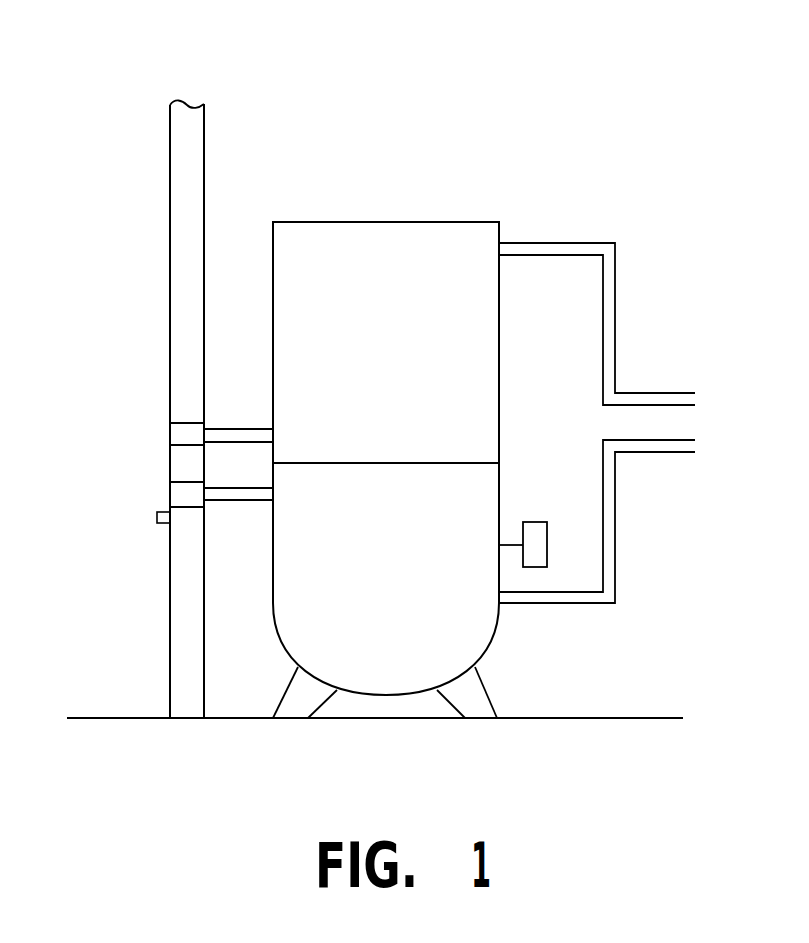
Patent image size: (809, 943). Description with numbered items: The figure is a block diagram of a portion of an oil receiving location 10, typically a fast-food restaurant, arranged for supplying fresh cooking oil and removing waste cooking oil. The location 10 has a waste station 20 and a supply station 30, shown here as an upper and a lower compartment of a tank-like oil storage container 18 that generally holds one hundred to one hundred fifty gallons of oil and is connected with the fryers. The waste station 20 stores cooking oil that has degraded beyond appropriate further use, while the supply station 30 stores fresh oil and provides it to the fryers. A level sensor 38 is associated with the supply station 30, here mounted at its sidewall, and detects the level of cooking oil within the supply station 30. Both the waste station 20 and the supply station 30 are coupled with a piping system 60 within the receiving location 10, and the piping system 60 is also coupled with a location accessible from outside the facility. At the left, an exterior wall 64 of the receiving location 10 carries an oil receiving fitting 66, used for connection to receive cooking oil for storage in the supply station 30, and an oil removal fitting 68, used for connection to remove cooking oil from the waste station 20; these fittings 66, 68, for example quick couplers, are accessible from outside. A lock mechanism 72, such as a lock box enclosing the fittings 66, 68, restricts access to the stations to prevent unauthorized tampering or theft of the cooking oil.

The oil receiving location 10 is at (685, 157).
The oil storage container 18 is at (387, 220).
The waste station 20 is at (410, 367).
The supply station 30 is at (410, 587).
The level sensor 38 is at (535, 522).
The piping system 60 is at (708, 388).
The exterior wall 64 is at (170, 166).
The oil receiving fitting 66 is at (170, 493).
The oil removal fitting 68 is at (170, 433).
The lock mechanism 72 is at (157, 519).